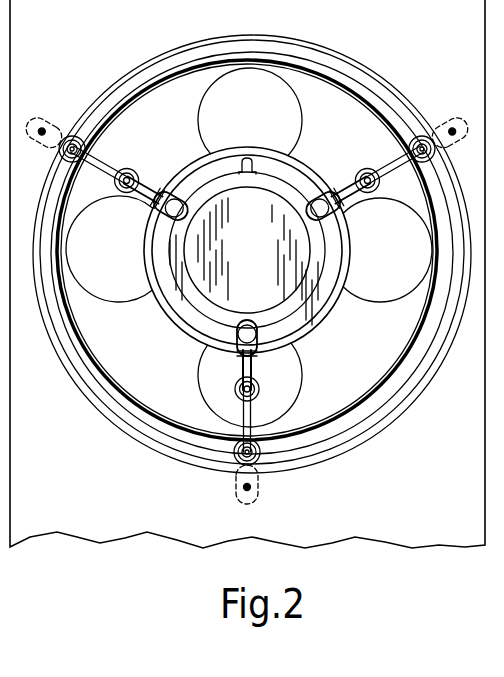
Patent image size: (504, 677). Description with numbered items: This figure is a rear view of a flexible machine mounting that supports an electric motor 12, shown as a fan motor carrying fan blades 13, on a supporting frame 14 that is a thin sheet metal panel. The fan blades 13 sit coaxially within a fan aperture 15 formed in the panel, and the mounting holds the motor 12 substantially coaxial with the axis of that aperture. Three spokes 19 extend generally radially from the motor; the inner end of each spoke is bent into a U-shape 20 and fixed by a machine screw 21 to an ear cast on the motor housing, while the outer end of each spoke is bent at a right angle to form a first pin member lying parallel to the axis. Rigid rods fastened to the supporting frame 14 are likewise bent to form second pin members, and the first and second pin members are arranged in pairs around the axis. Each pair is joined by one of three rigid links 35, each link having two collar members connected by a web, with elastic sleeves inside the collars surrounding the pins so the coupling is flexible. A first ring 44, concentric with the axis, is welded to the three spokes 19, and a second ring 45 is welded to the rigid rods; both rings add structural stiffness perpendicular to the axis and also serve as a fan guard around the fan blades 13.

The electric motor 12 is at (256, 246).
The fan blades 13 is at (126, 294).
The supporting frame 14 is at (434, 527).
The fan aperture 15 is at (415, 371).
The spokes 19 is at (363, 176).
The U-shape 20 is at (332, 180).
The machine screws 21 is at (323, 186).
The rigid links 35 is at (407, 172).
The first ring 44 is at (352, 257).
The second ring 45 is at (389, 380).